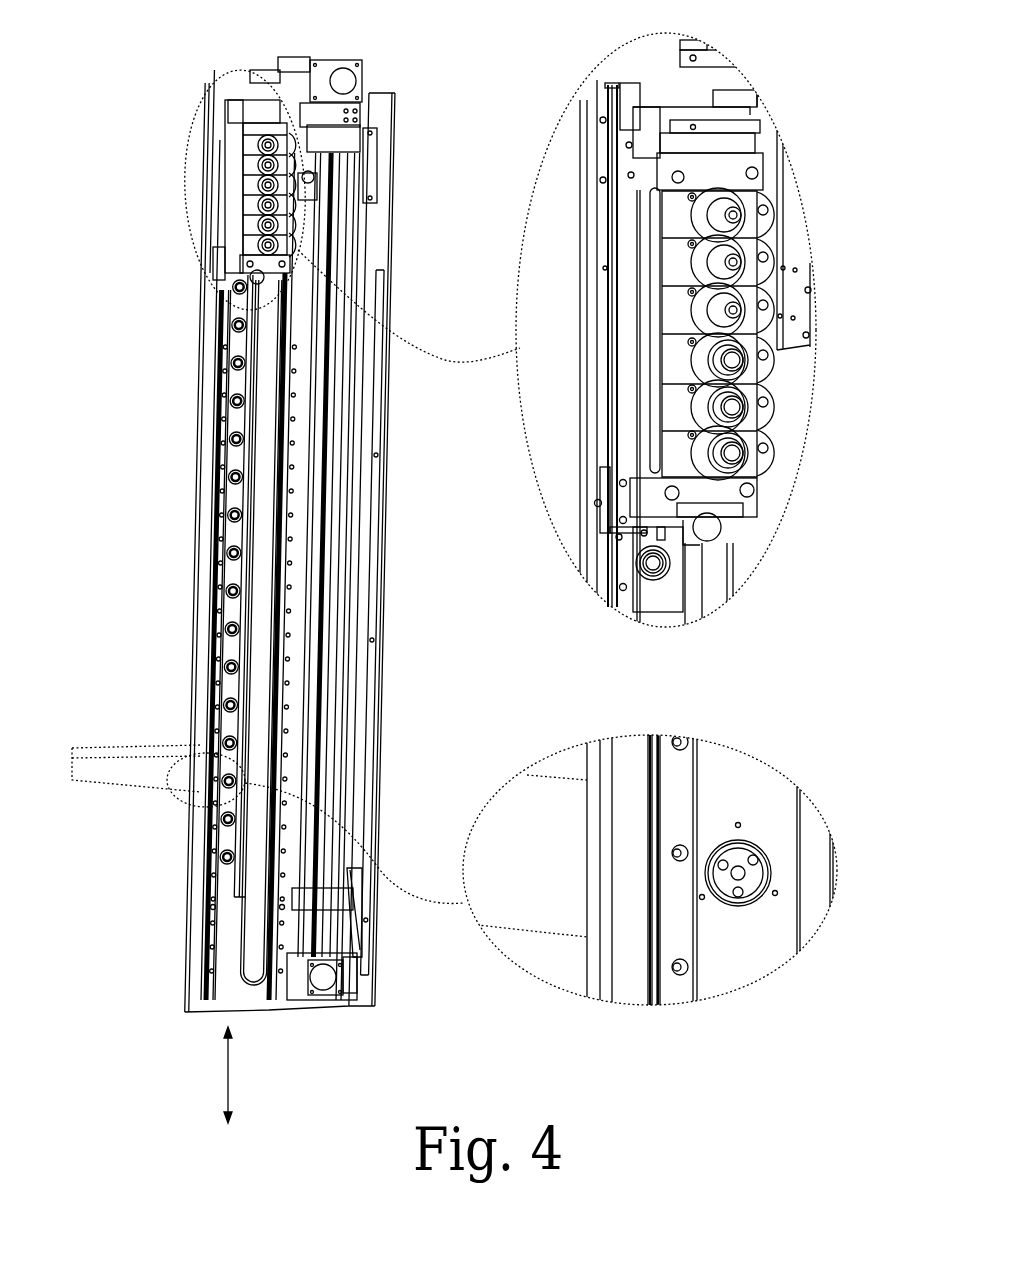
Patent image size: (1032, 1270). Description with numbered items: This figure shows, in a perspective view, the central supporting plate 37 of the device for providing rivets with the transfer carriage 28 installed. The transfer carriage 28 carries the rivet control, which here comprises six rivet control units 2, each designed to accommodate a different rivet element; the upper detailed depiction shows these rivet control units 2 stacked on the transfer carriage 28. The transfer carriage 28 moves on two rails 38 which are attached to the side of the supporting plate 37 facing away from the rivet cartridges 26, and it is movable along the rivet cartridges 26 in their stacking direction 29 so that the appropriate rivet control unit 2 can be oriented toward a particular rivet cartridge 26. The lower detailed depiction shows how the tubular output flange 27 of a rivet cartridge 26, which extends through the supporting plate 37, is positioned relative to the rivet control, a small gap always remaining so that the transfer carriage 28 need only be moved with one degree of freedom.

The rivet control unit 2 is at (782, 297).
The rivet cartridge 26 is at (120, 747).
The output flange 27 is at (740, 853).
The transfer carriage 28 is at (610, 287).
The stacking direction 29 is at (228, 1075).
The supporting plate 37 is at (253, 997).
The rails 38 is at (620, 567).